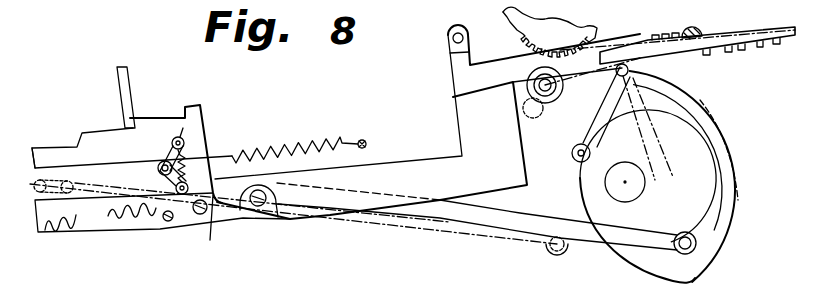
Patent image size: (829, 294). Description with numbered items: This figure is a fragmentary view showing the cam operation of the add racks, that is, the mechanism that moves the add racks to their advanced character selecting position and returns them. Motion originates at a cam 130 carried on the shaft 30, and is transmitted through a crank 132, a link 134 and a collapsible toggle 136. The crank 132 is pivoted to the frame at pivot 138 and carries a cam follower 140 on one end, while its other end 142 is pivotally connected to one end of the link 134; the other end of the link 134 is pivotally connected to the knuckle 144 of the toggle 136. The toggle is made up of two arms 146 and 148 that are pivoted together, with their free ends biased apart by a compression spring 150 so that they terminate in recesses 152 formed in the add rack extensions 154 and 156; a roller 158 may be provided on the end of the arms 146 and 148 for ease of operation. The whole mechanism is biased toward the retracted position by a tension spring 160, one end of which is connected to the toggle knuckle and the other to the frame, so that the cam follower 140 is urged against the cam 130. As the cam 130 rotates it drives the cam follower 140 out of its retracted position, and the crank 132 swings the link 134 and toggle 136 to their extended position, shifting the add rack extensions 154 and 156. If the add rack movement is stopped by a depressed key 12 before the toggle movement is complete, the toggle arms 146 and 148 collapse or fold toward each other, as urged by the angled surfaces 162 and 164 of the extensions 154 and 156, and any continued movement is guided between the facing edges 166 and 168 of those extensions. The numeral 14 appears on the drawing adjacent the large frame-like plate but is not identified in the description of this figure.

The depressed key 12 is at (121, 80).
The frame plate 14 is at (476, 130).
The shaft 30 is at (625, 185).
The cam 130 is at (718, 240).
The crank 132 is at (700, 92).
The link 134 is at (500, 218).
The collapsible toggle 136 is at (186, 126).
The pivot 138 is at (622, 77).
The cam follower 140 is at (573, 155).
The crank end 142 is at (692, 248).
The knuckle 144 is at (162, 165).
The toggle arm 146 is at (167, 148).
The toggle arm 148 is at (167, 197).
The compression spring 150 is at (195, 158).
The recesses 152 is at (184, 146).
The add rack extension 154 is at (72, 145).
The add rack extension 156 is at (53, 210).
The roller 158 is at (184, 144).
The tension spring 160 is at (320, 138).
The angled surface 162 is at (172, 137).
The angled surface 164 is at (180, 200).
The facing edge 166 is at (40, 150).
The facing edge 168 is at (107, 192).